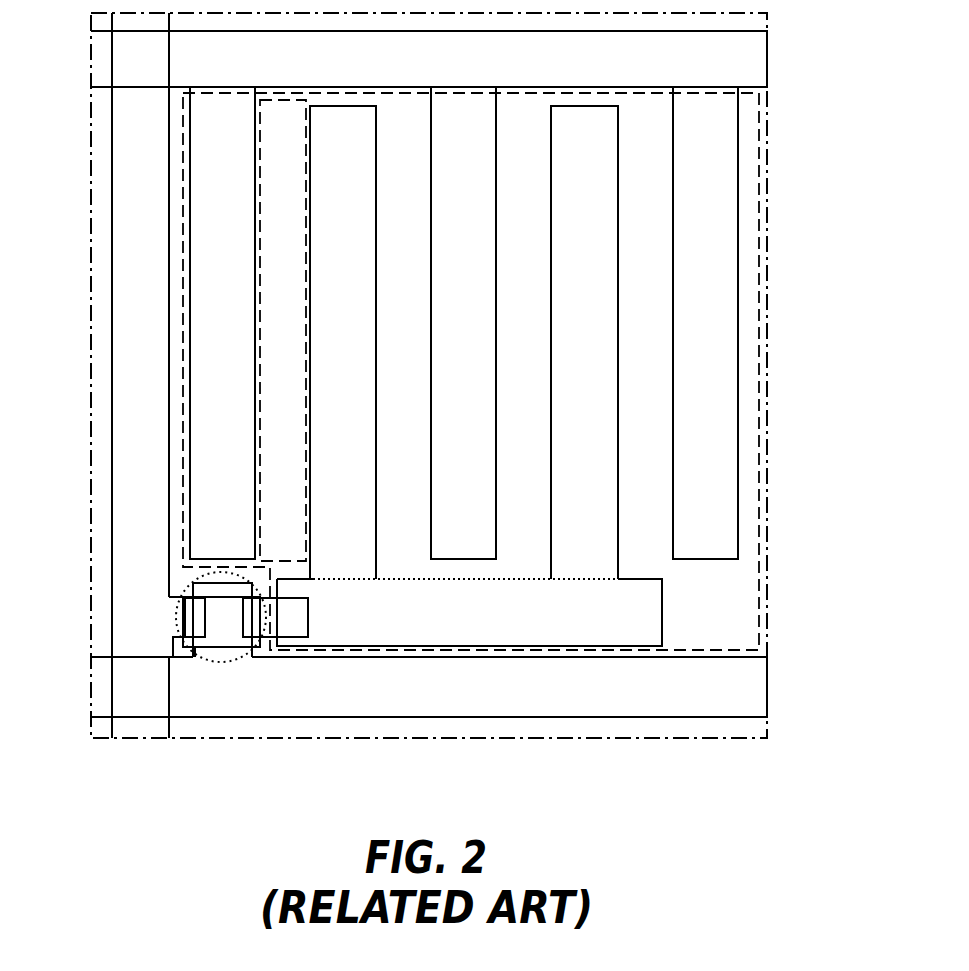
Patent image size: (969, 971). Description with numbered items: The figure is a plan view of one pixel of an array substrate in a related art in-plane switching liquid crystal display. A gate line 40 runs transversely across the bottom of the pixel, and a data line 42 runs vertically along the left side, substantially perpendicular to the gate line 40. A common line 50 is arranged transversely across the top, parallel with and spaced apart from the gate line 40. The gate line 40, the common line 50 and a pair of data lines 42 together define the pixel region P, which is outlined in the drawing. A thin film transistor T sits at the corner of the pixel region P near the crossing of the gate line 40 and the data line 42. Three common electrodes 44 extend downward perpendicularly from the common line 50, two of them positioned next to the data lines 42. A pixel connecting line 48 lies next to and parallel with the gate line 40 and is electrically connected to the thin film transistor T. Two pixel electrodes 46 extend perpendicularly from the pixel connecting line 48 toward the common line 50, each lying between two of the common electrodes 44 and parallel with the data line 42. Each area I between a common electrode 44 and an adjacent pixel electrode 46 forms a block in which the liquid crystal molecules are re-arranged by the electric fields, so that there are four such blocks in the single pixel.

The gate line 40 is at (768, 657).
The data line 42 is at (169, 740).
The common electrode 44 is at (233, 161).
The pixel electrode 46 is at (358, 240).
The pixel connecting line 48 is at (657, 617).
The common line 50 is at (768, 31).
The pixel region P is at (178, 361).
The area between common electrode and pixel electrode I is at (256, 256).
The thin film transistor T is at (222, 663).